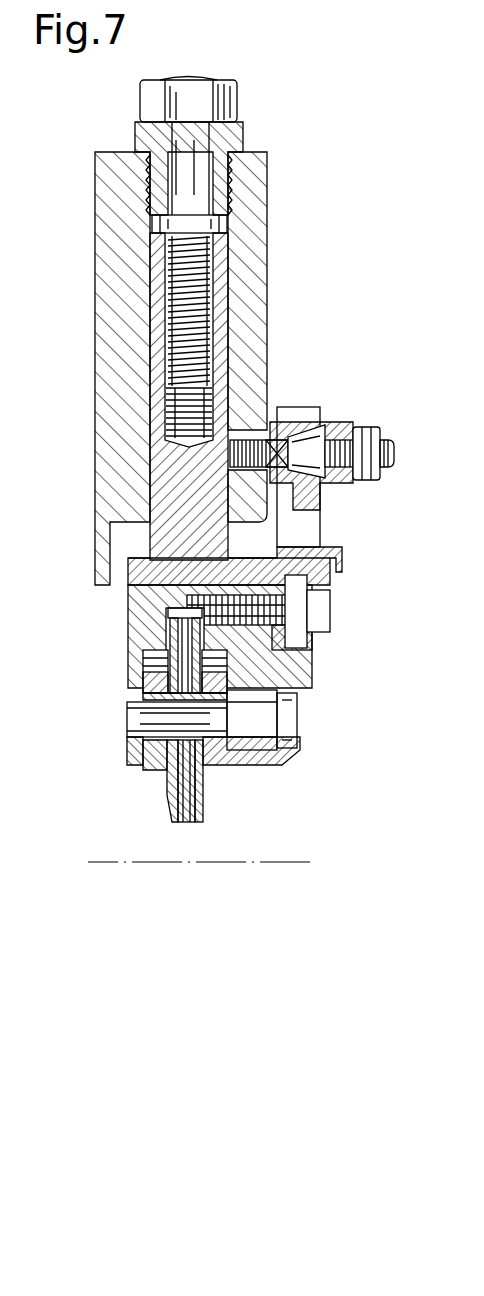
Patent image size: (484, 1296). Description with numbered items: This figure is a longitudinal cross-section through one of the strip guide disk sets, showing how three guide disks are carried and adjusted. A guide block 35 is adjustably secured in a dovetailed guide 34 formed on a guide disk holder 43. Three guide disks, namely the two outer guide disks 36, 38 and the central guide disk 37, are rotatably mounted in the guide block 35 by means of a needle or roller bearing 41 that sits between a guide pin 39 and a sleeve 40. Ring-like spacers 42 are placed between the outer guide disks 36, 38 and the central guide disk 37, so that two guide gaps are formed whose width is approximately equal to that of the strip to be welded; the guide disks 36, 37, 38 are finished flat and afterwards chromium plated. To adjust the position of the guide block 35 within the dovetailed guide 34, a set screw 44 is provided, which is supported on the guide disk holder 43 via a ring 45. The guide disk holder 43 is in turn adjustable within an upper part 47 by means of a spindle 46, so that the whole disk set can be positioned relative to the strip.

The dovetailed guide 34 is at (318, 590).
The guide block 35 is at (300, 680).
The guide disk 36 is at (170, 802).
The central guide disk 37 is at (183, 822).
The guide disk 38 is at (198, 810).
The guide pin 39 is at (290, 732).
The sleeve 40 is at (142, 767).
The needle or roller bearing 41 is at (152, 692).
The ring-like spacer 42 is at (198, 767).
The guide disk holder 43 is at (215, 340).
The set screw 44 is at (320, 612).
The ring 45 is at (298, 632).
The spindle 46 is at (212, 290).
The upper part 47 is at (252, 243).